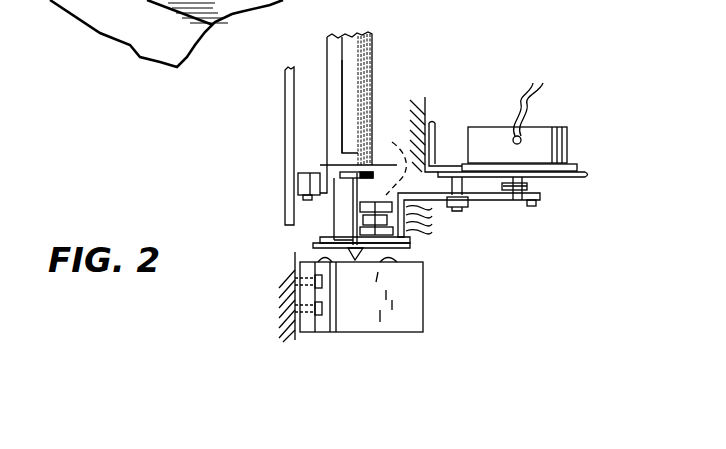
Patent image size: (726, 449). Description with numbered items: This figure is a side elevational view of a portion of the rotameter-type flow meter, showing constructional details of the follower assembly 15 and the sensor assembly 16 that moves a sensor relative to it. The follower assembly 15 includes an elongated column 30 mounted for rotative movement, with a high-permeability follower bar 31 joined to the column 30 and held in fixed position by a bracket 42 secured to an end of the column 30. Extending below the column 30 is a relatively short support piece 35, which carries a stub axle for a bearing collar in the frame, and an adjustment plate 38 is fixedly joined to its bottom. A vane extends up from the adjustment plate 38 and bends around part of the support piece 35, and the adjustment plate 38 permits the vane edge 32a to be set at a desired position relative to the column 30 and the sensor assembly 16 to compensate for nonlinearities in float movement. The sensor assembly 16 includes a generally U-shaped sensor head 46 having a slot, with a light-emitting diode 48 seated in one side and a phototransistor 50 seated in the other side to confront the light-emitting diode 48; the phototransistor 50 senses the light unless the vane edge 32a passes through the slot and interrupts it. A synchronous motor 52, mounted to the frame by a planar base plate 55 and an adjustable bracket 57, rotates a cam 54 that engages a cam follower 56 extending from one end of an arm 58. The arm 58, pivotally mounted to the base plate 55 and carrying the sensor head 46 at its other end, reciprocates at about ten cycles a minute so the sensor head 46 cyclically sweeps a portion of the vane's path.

The follower assembly 15 is at (380, 42).
The column 30 is at (365, 68).
The follower bar 31 is at (282, 212).
The adjustable bracket 57 is at (428, 125).
The motor 52 is at (560, 132).
The base plate 55 is at (588, 177).
The cam follower 56 is at (533, 187).
The cam 54 is at (512, 190).
The arm 58 is at (490, 202).
The sensor assembly 16 is at (548, 215).
The light-emitting diode 48 is at (393, 156).
The bracket 42 is at (297, 192).
The support piece 35 is at (340, 195).
The sensor head 46 is at (390, 218).
The adjustment plate 38 is at (320, 242).
The vane edge 32a is at (310, 253).
The phototransistor 50 is at (359, 295).